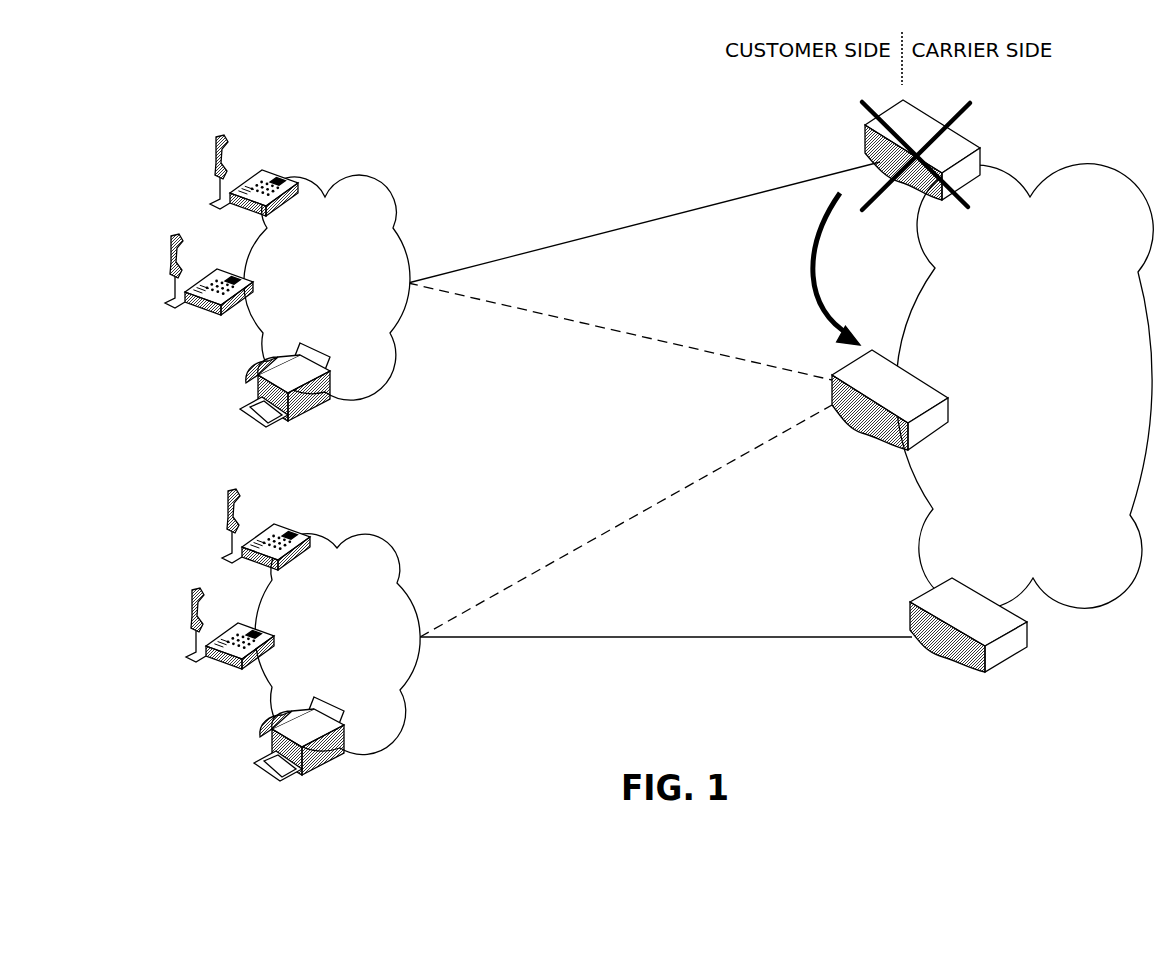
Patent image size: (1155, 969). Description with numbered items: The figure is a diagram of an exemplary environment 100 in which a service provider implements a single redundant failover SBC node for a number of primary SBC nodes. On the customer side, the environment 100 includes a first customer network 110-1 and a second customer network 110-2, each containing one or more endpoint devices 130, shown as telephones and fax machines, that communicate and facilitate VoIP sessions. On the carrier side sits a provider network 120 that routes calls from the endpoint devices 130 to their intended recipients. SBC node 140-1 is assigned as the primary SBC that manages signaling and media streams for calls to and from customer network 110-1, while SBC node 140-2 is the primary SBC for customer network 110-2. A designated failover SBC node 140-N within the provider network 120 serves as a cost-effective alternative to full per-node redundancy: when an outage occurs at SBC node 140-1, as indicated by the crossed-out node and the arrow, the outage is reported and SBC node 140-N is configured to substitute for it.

The environment 100 is at (272, 88).
The customer network 110-1 is at (327, 287).
The customer network 110-2 is at (337, 644).
The provider network 120 is at (1024, 386).
The endpoint devices 130 is at (260, 171).
The SBC node 140-1 is at (863, 128).
The failover SBC node 140-N is at (865, 432).
The SBC node 140-2 is at (948, 660).